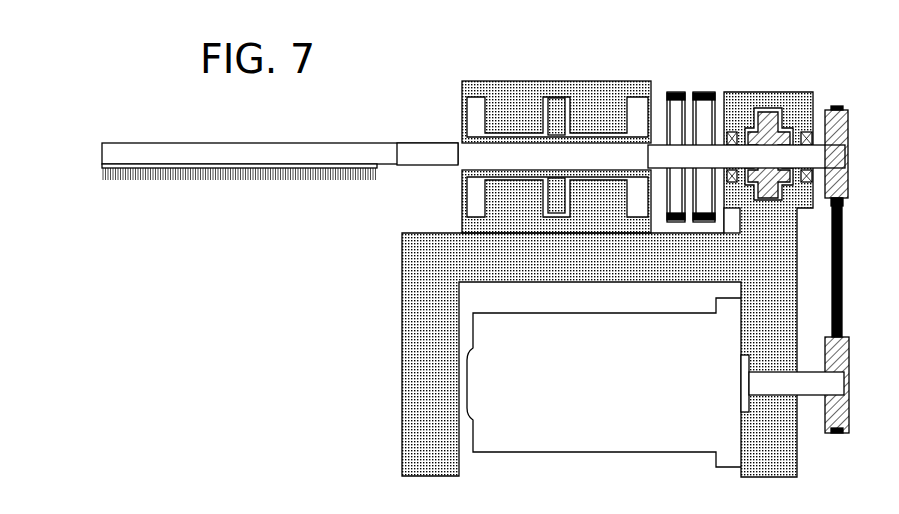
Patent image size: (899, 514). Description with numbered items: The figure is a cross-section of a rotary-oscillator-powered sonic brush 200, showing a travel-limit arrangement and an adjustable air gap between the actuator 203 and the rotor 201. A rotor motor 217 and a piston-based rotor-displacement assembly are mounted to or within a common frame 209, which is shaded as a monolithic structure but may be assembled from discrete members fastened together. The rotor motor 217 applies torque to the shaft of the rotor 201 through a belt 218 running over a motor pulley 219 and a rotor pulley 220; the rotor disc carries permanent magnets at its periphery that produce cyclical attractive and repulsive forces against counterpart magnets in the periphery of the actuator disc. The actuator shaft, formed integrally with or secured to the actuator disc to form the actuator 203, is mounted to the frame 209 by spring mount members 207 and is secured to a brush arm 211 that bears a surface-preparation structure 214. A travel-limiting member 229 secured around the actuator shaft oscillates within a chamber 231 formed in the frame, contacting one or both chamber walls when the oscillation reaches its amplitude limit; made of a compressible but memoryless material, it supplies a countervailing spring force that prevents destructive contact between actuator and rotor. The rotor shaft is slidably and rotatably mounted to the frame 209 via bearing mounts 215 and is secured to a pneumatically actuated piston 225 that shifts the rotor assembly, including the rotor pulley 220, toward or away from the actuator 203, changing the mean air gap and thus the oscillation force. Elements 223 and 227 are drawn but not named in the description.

The rotary-oscillator-powered sonic brush 200 is at (326, 381).
The rotor 201 is at (732, 92).
The actuator 203 is at (604, 144).
The spring mount members 207 is at (558, 245).
The frame 209 is at (480, 82).
The brush arm 211 is at (352, 147).
The surface-preparation structure 214 is at (378, 178).
The bearing mounts 215 is at (725, 197).
The rotor motor 217 is at (620, 443).
The belt 218 is at (832, 249).
The motor pulley 219 is at (826, 337).
The rotor pulley 220 is at (830, 202).
The output shaft 223 is at (805, 390).
The pneumatically actuated piston 225 is at (749, 148).
The end cap 227 is at (798, 94).
The travel-limiting member 229 is at (554, 100).
The chamber 231 is at (567, 115).